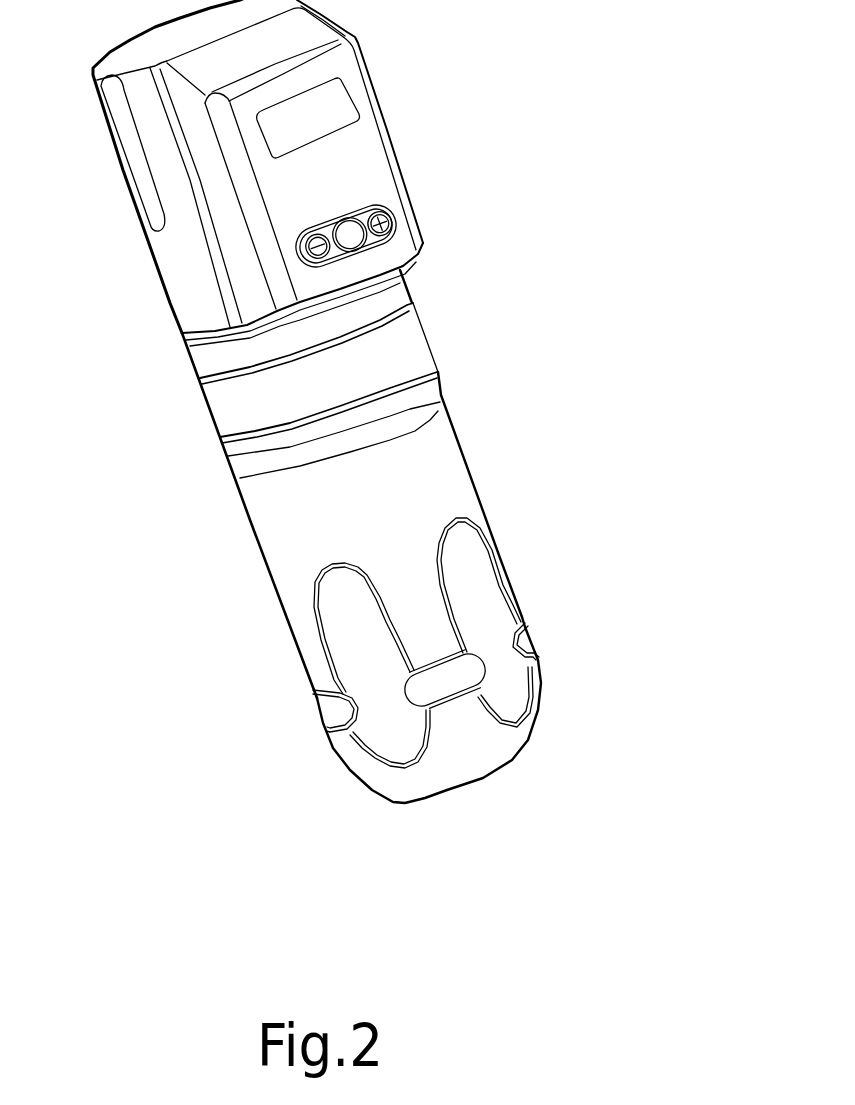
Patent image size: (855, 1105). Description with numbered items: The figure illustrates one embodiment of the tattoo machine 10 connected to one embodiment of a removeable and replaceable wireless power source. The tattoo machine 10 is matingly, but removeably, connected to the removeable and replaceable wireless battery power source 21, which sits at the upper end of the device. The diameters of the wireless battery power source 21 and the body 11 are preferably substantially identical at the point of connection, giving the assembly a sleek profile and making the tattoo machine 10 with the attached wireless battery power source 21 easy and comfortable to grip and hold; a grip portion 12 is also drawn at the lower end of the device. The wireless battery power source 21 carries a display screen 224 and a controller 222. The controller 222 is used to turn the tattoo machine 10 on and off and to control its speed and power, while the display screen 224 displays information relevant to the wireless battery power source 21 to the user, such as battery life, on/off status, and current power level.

The tattoo machine 10 is at (470, 386).
The body 11 is at (168, 418).
The grip 12 is at (231, 620).
The wireless battery power source 21 is at (337, 173).
The controller 222 is at (420, 244).
The display screen 224 is at (372, 79).